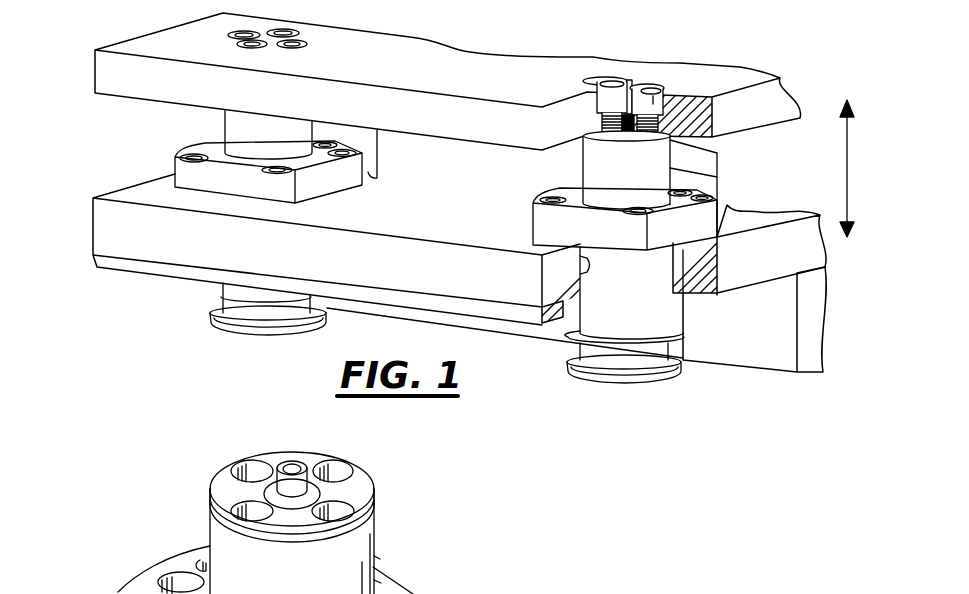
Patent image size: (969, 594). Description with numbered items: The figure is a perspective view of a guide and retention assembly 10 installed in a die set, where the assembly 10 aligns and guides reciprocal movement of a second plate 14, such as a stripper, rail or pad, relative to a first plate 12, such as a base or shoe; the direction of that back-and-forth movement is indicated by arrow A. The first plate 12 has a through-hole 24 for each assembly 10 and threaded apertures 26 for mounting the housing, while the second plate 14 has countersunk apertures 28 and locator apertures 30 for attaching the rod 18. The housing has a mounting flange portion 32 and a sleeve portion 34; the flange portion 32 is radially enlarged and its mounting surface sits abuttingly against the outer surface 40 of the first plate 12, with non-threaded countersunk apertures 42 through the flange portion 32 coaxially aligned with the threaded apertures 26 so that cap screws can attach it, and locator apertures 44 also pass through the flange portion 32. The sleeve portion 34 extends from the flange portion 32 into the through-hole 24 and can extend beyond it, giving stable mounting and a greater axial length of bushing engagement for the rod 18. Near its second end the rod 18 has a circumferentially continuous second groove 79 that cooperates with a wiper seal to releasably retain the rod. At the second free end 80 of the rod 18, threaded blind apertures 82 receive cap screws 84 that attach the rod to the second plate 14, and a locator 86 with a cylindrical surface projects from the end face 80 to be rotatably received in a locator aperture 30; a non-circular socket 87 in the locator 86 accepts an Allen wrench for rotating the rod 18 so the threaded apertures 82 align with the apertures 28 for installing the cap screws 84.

The guide and retention assembly 10 is at (218, 126).
The first plate 12 is at (84, 222).
The second plate 14 is at (86, 71).
The rod 18 is at (572, 168).
The through-hole 24 is at (673, 277).
The threaded apertures 26 is at (588, 258).
The countersunk apertures 28 is at (266, 30).
The locator apertures 30 is at (272, 46).
The mounting flange portion 32 is at (548, 224).
The sleeve portion 34 is at (652, 330).
The outer surface 40 is at (742, 222).
The countersunk apertures 42 is at (118, 592).
The locator apertures 44 is at (178, 580).
The second groove 79 is at (373, 502).
The second free end 80 is at (362, 482).
The threaded blind apertures 82 is at (321, 466).
The cap screws 84 is at (653, 102).
The locator 86 is at (290, 494).
The non-circular socket 87 is at (288, 473).
The direction of movement A is at (846, 158).